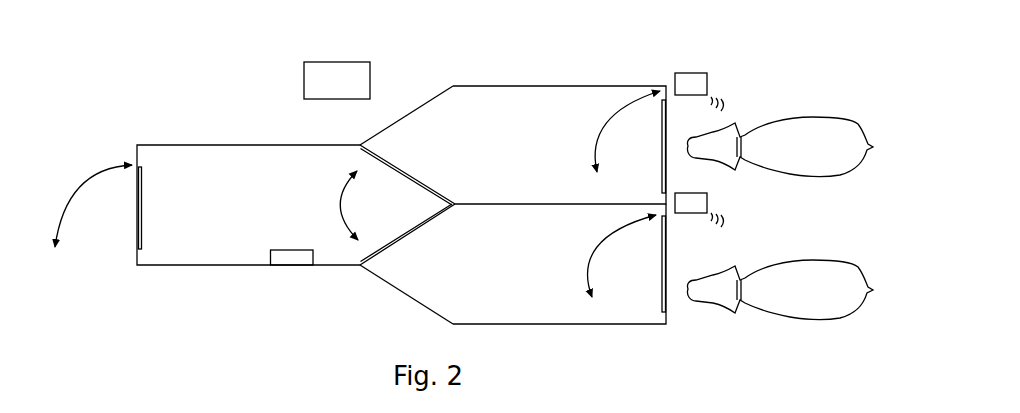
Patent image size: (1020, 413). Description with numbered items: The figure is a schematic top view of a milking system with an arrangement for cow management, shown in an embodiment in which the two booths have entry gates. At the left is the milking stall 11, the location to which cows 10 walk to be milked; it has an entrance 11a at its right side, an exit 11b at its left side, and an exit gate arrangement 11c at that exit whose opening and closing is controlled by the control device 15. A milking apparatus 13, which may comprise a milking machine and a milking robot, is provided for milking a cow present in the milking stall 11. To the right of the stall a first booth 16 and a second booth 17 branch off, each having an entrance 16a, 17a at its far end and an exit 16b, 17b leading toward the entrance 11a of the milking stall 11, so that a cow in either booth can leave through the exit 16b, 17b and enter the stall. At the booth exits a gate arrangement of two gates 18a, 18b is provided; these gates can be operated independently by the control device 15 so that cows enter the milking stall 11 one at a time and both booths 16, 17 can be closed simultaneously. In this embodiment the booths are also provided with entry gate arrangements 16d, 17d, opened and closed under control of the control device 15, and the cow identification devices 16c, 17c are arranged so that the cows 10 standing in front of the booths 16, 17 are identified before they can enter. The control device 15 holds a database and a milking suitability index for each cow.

The cows 10 is at (818, 116).
The milking stall 11 is at (201, 267).
The entrance 11a is at (326, 205).
The exit 11b is at (163, 208).
The exit gate arrangement 11c is at (138, 218).
The milking apparatus 13 is at (288, 266).
The control device 15 is at (370, 68).
The first booth 16 is at (559, 318).
The entrance 16a is at (622, 256).
The exit 16b is at (406, 291).
The cow identification device 16c is at (707, 202).
The entry gate arrangement 16d is at (662, 288).
The second booth 17 is at (558, 201).
The entrance 17a is at (627, 131).
The exit 17b is at (406, 122).
The cow identification device 17c is at (707, 84).
The entry gate arrangement 17d is at (661, 163).
The gate 18a is at (430, 222).
The gate 18b is at (388, 163).